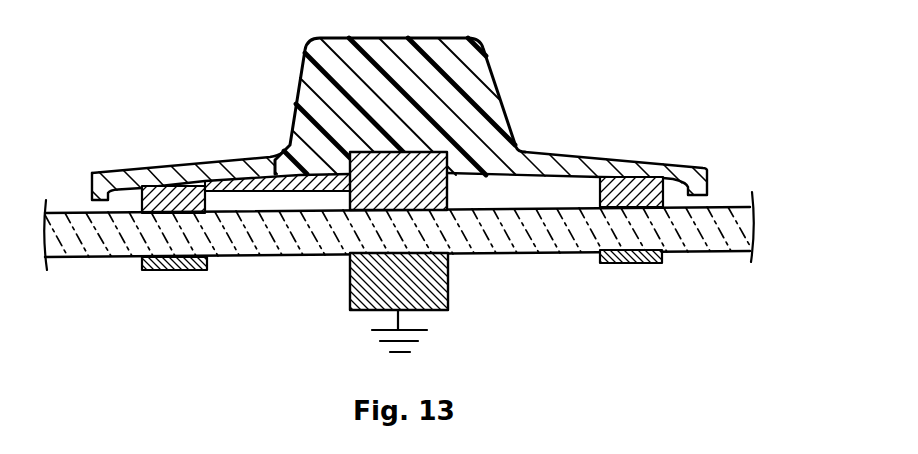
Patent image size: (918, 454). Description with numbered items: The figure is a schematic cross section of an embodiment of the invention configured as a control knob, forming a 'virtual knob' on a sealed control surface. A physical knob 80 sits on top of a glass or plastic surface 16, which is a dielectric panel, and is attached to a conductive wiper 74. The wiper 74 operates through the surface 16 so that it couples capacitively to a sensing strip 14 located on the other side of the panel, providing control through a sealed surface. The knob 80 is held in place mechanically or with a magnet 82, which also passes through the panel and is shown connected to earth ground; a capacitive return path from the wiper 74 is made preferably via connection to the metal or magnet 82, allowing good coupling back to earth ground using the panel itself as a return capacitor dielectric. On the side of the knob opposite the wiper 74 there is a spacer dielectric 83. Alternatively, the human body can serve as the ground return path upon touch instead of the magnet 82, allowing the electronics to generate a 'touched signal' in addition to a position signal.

The sensing strip 14 is at (170, 272).
The glass or plastic surface 16 is at (752, 232).
The conductive wiper 74 is at (175, 181).
The physical knob 80 is at (289, 116).
The magnet 82 is at (442, 152).
The spacer dielectric 83 is at (636, 178).